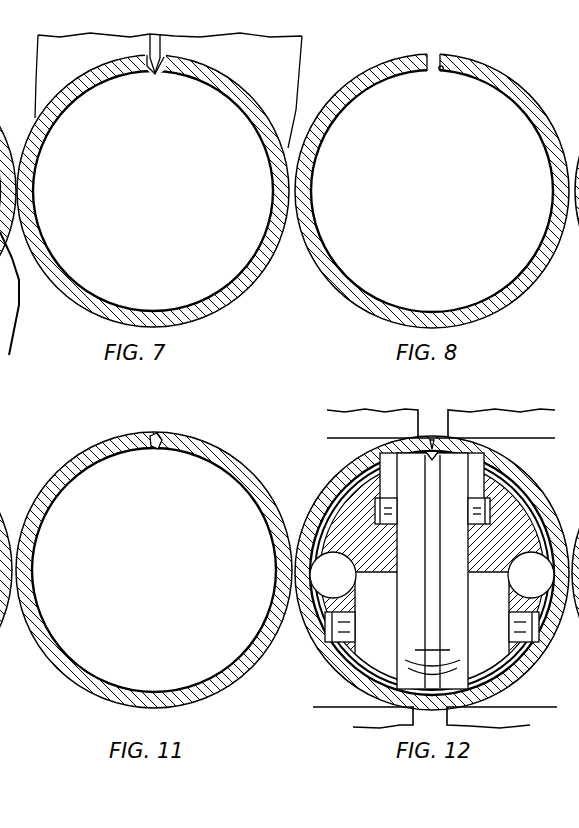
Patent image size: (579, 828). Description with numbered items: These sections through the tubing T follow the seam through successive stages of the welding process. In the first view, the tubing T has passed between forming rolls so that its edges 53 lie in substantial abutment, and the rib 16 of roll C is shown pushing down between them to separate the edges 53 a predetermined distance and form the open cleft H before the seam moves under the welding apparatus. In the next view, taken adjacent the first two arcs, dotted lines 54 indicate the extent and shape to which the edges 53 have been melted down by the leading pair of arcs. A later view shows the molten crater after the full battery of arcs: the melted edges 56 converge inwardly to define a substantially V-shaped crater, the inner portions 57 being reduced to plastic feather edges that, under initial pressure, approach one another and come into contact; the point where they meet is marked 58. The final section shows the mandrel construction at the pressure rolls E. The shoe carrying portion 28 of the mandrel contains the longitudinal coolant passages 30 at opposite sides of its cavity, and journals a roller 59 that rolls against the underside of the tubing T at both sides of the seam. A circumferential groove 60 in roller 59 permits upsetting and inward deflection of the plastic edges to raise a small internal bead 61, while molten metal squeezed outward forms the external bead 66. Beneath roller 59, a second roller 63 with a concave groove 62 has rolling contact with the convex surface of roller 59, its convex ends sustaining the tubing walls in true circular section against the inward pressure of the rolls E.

In FIG. 7, the rib 16 is at (148, 45).
In FIG. 7, the edges of the tubing 53 is at (168, 61).
In FIG. 8, the edges of the tubing 53 is at (430, 73).
In FIG. 7, the roll C is at (272, 64).
In FIG. 7, the tubing T is at (34, 168).
In FIG. 8, the tubing T is at (331, 263).
In FIG. 11, the tubing T is at (33, 552).
In FIG. 12, the tubing T is at (518, 477).
In FIG. 8, the dotted lines 54 is at (446, 58).
In FIG. 8, the open cleft H is at (443, 70).
In FIG. 11, the weld joint 58 is at (174, 427).
In FIG. 11, the inner portions 57 is at (158, 450).
In FIG. 11, the edges of the molten pool 56 is at (165, 446).
In FIG. 12, the external bead 66 is at (433, 437).
In FIG. 12, the pressure rolls E is at (487, 420).
In FIG. 12, the roller 59 is at (410, 470).
In FIG. 12, the internal bead 61 is at (440, 468).
In FIG. 12, the circumferential groove 60 is at (447, 455).
In FIG. 12, the shoe carrying portion 28 is at (520, 506).
In FIG. 12, the coolant chambers or passages 30 is at (332, 592).
In FIG. 12, the roller 63 is at (509, 668).
In FIG. 12, the concave groove 62 is at (418, 675).